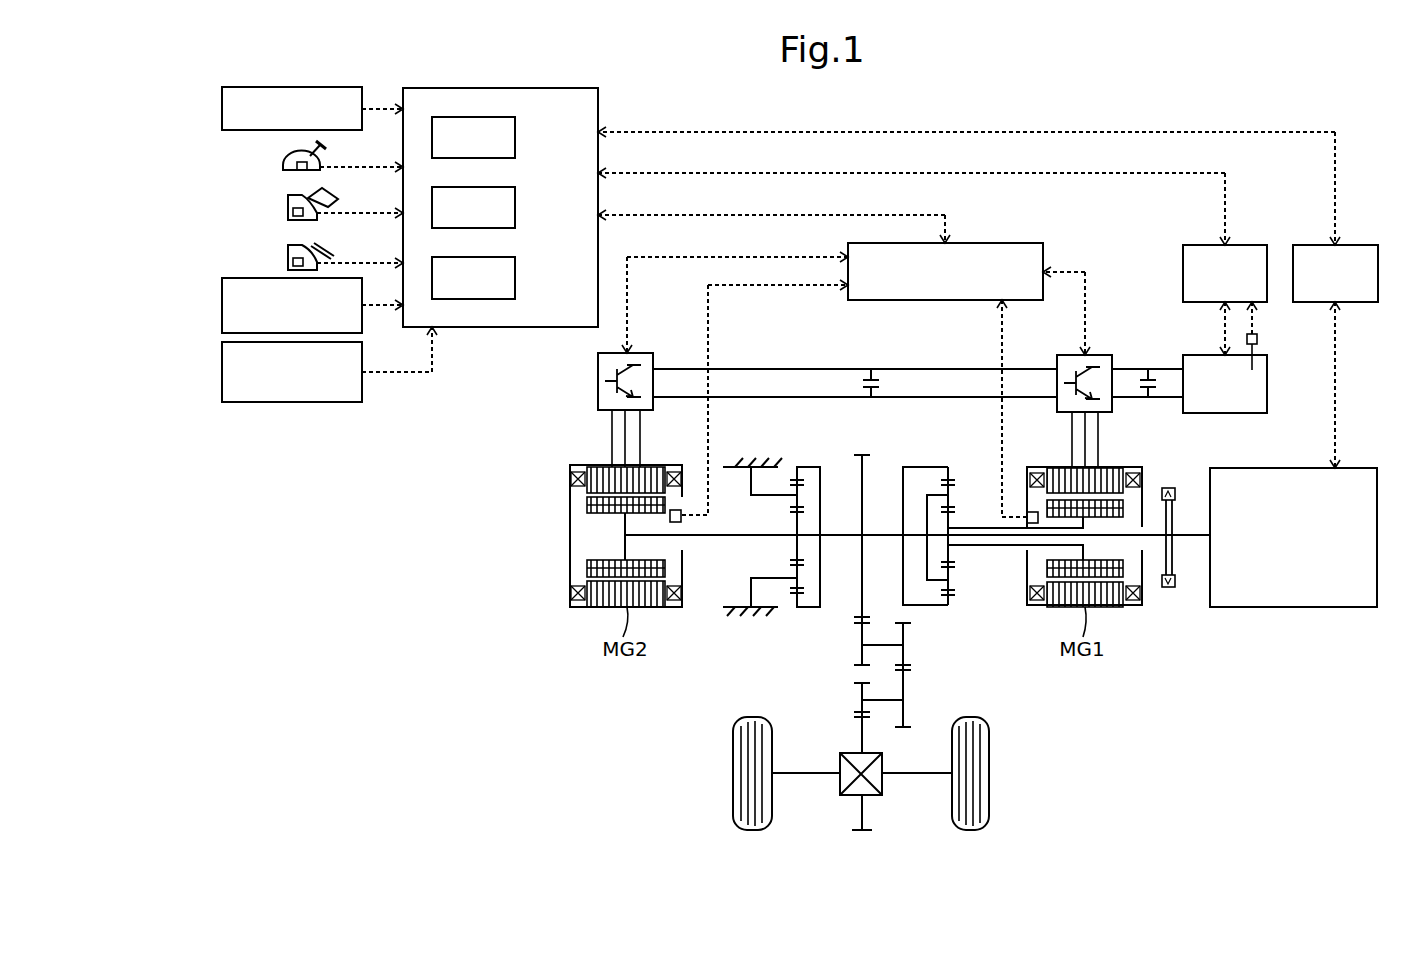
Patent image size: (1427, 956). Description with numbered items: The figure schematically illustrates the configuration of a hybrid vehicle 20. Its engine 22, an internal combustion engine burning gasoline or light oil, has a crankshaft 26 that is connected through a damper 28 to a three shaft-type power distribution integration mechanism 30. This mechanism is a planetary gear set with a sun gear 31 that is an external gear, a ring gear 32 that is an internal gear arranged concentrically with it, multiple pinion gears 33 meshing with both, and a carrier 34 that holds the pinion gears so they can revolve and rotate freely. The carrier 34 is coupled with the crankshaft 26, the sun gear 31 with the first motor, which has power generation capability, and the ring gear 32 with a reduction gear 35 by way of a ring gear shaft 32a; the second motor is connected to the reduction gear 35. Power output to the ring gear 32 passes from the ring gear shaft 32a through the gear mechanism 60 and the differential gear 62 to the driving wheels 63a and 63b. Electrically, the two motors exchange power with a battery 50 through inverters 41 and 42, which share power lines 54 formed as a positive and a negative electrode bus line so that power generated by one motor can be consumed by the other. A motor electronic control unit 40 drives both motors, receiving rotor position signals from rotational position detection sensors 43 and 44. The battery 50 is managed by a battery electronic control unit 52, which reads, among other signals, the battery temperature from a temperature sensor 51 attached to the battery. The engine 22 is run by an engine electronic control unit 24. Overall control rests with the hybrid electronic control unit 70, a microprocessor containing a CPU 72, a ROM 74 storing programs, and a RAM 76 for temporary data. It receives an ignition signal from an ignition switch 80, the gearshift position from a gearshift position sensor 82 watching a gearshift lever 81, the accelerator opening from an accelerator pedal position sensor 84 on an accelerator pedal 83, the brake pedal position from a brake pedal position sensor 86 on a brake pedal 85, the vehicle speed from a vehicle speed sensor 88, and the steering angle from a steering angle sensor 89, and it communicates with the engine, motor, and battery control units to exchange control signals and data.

The hybrid vehicle 20 is at (1116, 90).
The engine 22 is at (1293, 607).
The engine electronic control unit 24 is at (1362, 245).
The crankshaft 26 is at (1195, 540).
The damper 28 is at (1167, 590).
The power distribution integration mechanism 30 is at (993, 511).
The sun gear 31 is at (953, 553).
The ring gear 32 is at (953, 600).
The ring gear shaft 32a is at (883, 528).
The pinion gears 33 is at (953, 573).
The carrier 34 is at (928, 495).
The reduction gear 35 is at (806, 446).
The motor electronic control unit 40 is at (988, 243).
The inverter 41 is at (1097, 355).
The inverter 42 is at (641, 352).
The rotational position detection sensor 43 is at (1033, 512).
The rotational position detection sensor 44 is at (677, 510).
The battery 50 is at (1225, 413).
The temperature sensor 51 is at (1258, 339).
The battery electronic control unit 52 is at (1250, 245).
The power lines 54 is at (932, 397).
The gear mechanism 60 is at (930, 687).
The differential gear 62 is at (882, 787).
The driving wheel 63a is at (733, 773).
The driving wheel 63b is at (989, 773).
The hybrid electronic control unit 70 is at (503, 88).
The CPU 72 is at (517, 137).
The ROM 74 is at (517, 207).
The RAM 76 is at (517, 277).
The ignition switch 80 is at (222, 105).
The gearshift lever 81 is at (314, 147).
The gearshift position sensor 82 is at (283, 165).
The accelerator pedal 83 is at (316, 196).
The accelerator pedal position sensor 84 is at (288, 213).
The brake pedal 85 is at (312, 249).
The brake pedal position sensor 86 is at (288, 263).
The vehicle speed sensor 88 is at (222, 300).
The steering angle sensor 89 is at (222, 370).